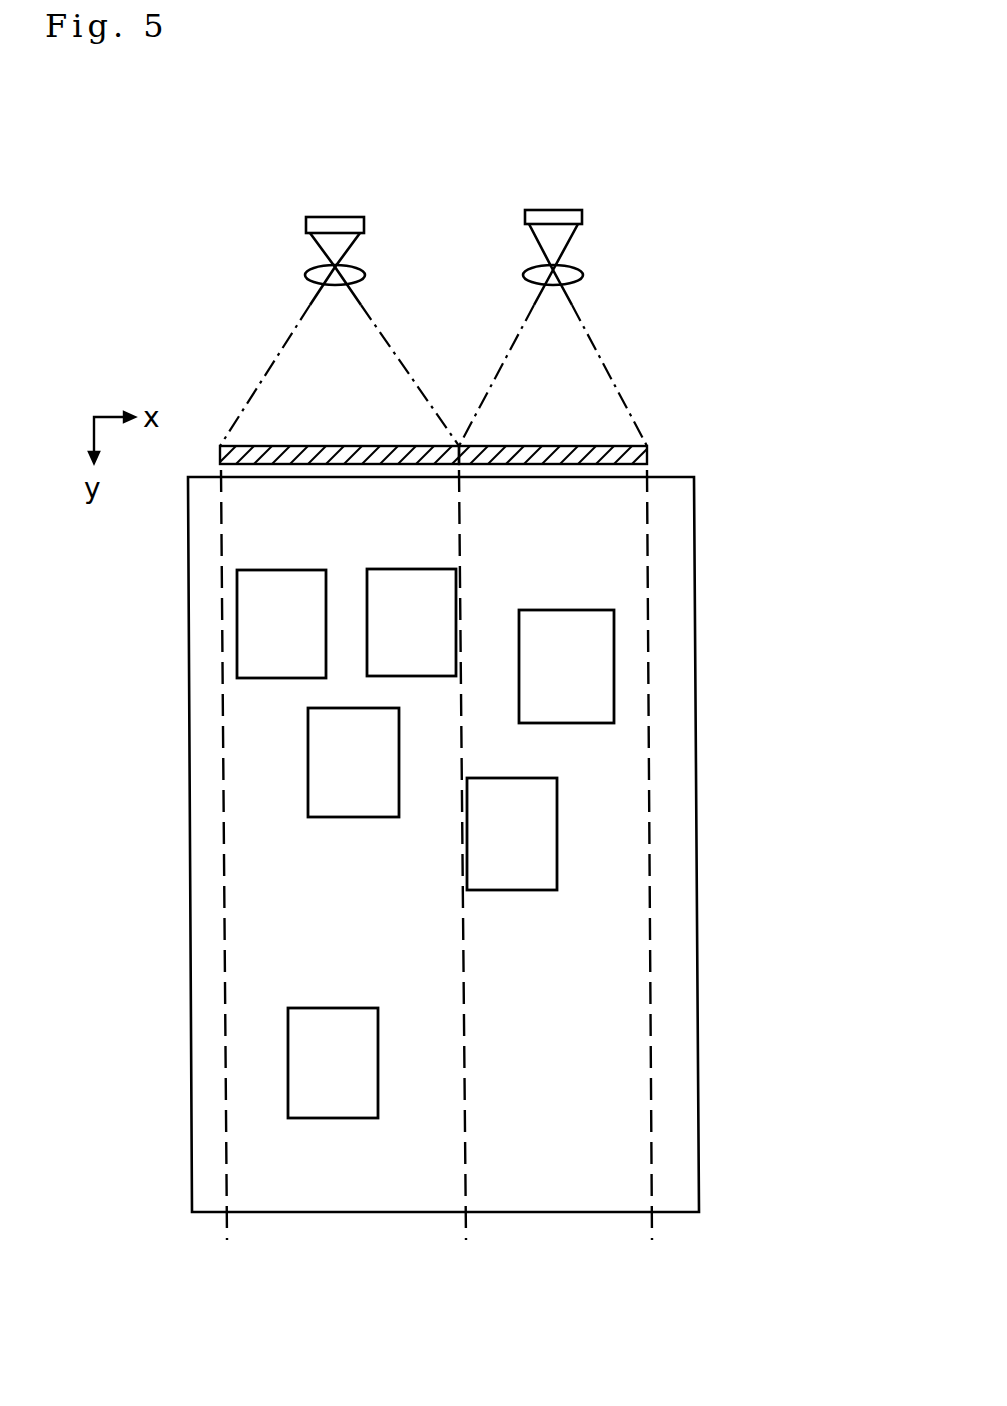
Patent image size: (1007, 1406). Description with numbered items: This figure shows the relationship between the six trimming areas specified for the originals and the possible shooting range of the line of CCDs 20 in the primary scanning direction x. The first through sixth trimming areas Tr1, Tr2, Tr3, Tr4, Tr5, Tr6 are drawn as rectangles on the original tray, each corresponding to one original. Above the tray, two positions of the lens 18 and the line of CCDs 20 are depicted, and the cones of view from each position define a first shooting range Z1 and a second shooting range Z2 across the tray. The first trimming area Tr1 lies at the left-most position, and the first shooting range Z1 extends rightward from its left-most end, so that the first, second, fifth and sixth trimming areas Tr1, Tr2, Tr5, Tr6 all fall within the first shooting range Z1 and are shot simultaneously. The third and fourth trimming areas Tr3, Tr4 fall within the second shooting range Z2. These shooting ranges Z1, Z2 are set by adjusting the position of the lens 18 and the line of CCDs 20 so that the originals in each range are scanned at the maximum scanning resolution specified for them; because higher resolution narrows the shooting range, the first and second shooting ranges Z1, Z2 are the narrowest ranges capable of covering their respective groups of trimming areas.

The line of CCDs 20 is at (530, 210).
The lens 18 is at (366, 275).
The first shooting range Z1 is at (267, 446).
The second shooting range Z2 is at (630, 444).
The first trimming area Tr1 is at (237, 611).
The second trimming area Tr2 is at (367, 673).
The third trimming area Tr3 is at (614, 672).
The fourth trimming area Tr4 is at (557, 835).
The fifth trimming area Tr5 is at (308, 778).
The sixth trimming area Tr6 is at (288, 1088).